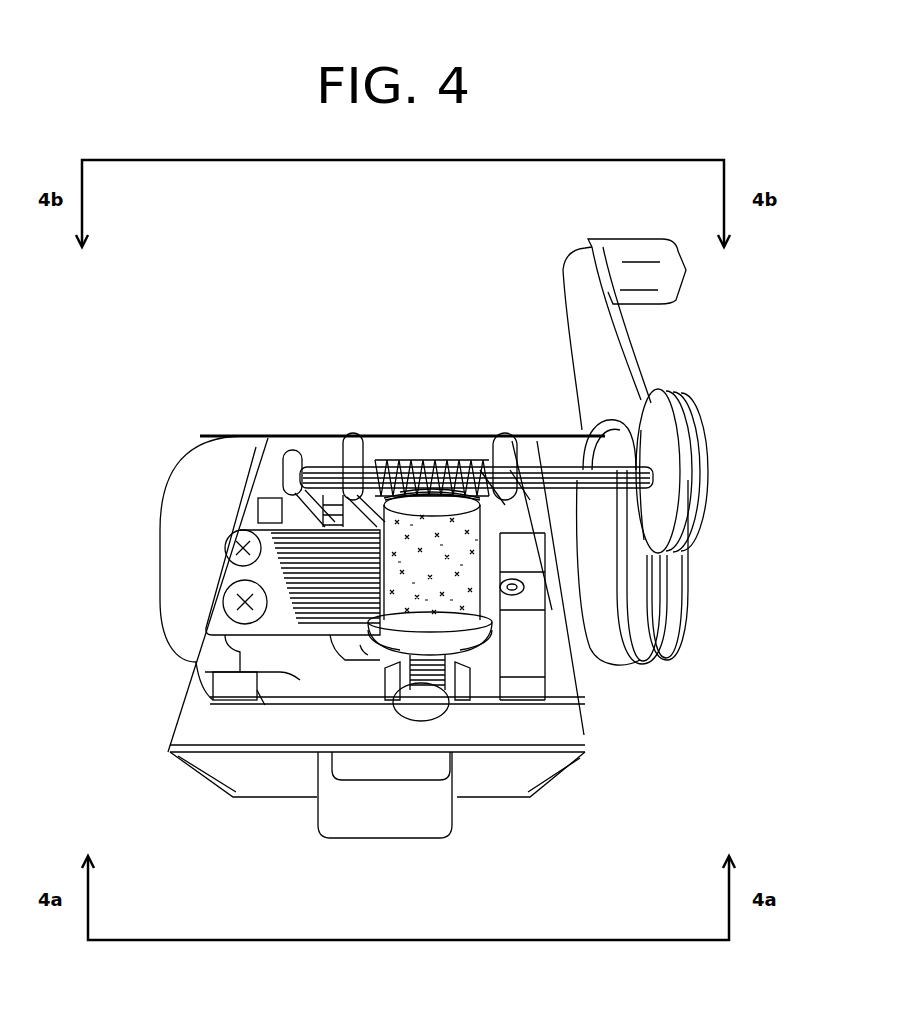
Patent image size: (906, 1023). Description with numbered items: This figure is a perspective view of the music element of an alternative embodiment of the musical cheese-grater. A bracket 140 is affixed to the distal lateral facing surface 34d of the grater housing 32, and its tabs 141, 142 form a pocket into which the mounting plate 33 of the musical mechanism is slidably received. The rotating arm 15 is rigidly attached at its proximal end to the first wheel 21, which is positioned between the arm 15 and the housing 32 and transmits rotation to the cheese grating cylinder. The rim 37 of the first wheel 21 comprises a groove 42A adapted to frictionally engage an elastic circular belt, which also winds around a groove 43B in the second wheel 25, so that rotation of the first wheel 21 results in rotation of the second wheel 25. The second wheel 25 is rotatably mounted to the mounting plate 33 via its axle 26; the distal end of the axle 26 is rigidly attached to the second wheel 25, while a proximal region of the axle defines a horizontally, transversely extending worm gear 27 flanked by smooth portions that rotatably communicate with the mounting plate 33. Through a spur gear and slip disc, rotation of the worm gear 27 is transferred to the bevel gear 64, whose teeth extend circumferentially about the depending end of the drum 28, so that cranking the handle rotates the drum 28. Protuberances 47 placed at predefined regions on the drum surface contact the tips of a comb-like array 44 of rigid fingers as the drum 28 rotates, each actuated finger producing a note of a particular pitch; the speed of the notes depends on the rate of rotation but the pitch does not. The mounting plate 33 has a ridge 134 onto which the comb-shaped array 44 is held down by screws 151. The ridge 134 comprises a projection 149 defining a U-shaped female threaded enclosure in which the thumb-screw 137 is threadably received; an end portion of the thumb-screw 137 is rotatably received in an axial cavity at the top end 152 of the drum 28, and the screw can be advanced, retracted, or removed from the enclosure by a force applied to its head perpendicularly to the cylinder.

The rotating arm 15 is at (588, 338).
The first wheel 21 is at (576, 432).
The second wheel 25 is at (647, 432).
The axle 26 is at (550, 468).
The worm gear 27 is at (394, 462).
The drum 28 is at (423, 567).
The housing 32 is at (563, 732).
The mounting plate 33 is at (277, 675).
The distal lateral facing surface 34d is at (193, 723).
The rim 37 is at (652, 627).
The groove 42A is at (628, 650).
The disc outer rim 43B is at (690, 508).
The comb-like array of rigid fingers 44 is at (297, 583).
The protuberances 47 is at (416, 548).
The bevel gear 64 is at (423, 494).
The ridge 134 is at (249, 700).
The thumb-screw 137 is at (434, 713).
The bracket 140 is at (263, 705).
The tab 141 is at (523, 680).
The tab 142 is at (220, 687).
The projection 149 is at (386, 690).
The screws 151 is at (233, 603).
The top end 152 is at (362, 652).